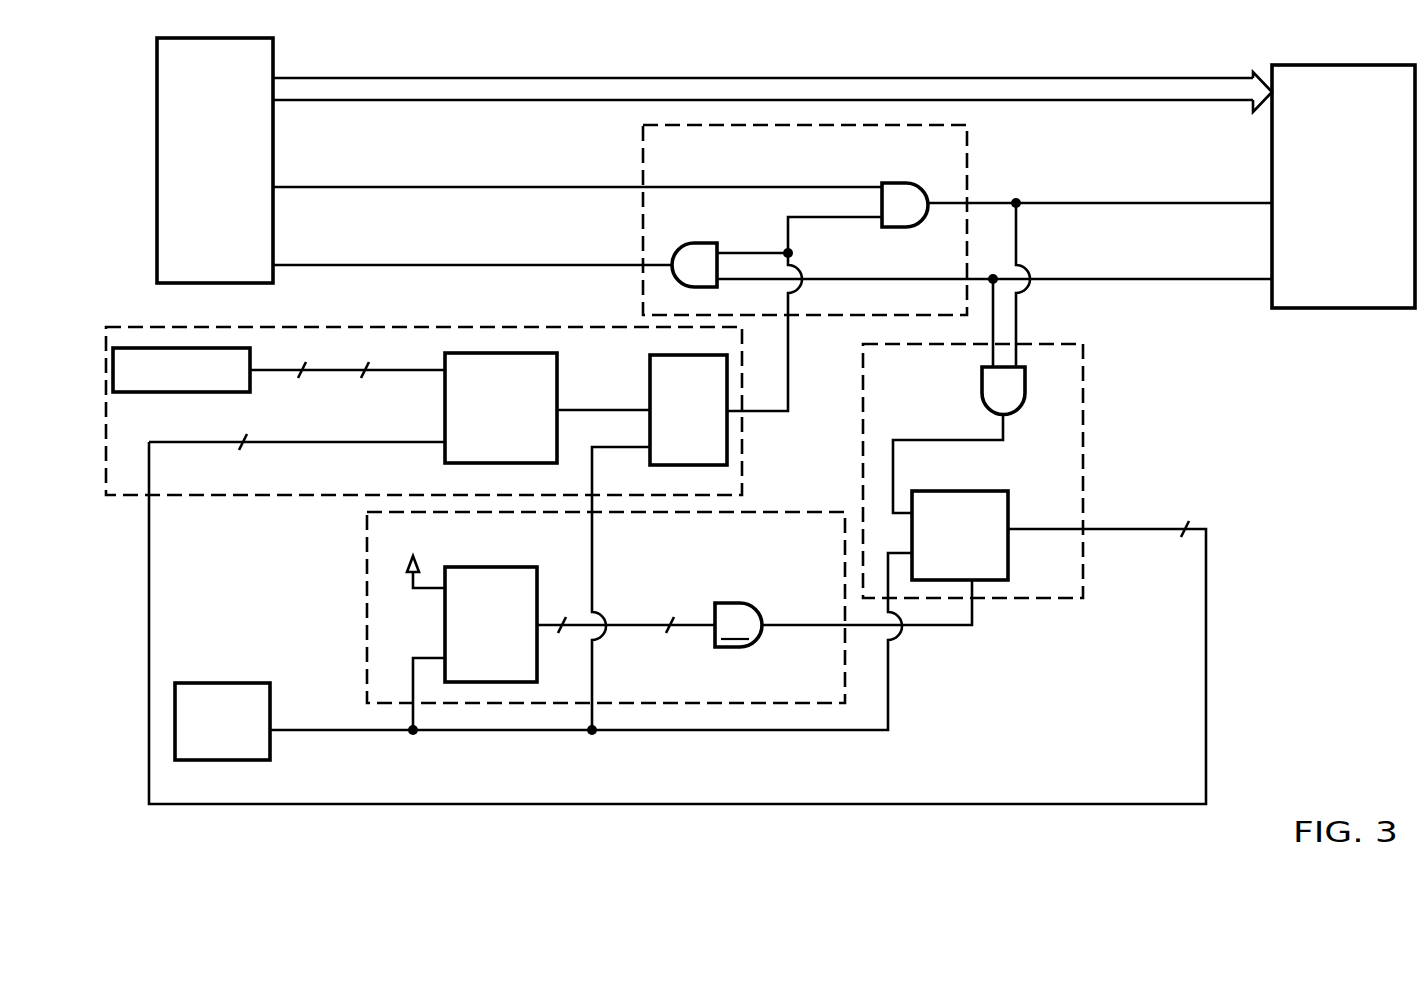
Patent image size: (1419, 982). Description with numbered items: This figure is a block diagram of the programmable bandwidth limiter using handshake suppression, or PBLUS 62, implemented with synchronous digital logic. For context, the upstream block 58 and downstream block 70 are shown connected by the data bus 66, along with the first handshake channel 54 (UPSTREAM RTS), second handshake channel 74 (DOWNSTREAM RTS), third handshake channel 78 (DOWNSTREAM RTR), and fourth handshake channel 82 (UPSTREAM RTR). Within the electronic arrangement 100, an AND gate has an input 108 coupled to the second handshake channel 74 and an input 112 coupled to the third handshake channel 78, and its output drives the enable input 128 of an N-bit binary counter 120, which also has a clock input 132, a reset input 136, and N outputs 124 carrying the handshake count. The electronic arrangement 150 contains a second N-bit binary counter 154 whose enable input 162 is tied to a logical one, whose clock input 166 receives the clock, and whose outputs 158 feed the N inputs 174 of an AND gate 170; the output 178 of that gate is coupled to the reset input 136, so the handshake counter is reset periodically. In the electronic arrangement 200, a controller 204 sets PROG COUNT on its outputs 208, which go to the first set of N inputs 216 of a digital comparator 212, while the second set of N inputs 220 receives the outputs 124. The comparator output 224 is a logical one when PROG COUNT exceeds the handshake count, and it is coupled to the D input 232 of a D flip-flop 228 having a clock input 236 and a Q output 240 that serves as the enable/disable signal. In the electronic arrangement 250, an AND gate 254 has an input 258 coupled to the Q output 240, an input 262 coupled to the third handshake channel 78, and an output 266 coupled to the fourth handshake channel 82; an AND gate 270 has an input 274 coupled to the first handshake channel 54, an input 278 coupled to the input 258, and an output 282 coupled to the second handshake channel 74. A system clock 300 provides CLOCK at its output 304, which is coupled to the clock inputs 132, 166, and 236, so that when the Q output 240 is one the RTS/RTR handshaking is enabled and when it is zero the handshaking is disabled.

The programmable bandwidth limiter using handshake suppression 62 is at (1156, 837).
The upstream block 58 is at (229, 269).
The downstream block 70 is at (1358, 213).
The data bus 66 is at (725, 78).
The first handshake channel 54 is at (451, 186).
The fourth handshake channel 82 is at (454, 264).
The second handshake channel 74 is at (1043, 202).
The third handshake channel 78 is at (1046, 278).
The electronic arrangement 250 is at (643, 153).
The AND gate 254 is at (702, 243).
The output 266 is at (672, 254).
The input 258 is at (718, 250).
The input 262 is at (720, 285).
The AND gate 270 is at (898, 183).
The input 274 is at (881, 186).
The input 278 is at (882, 225).
The output 282 is at (930, 198).
The electronic arrangement 200 is at (418, 330).
The controller 204 is at (150, 392).
The outputs 208 is at (253, 368).
The first set of N inputs 216 is at (445, 372).
The second set of N inputs 220 is at (445, 443).
The digital comparator 212 is at (516, 456).
The output 224 is at (557, 400).
The D flip-flop 228 is at (703, 386).
The D input 232 is at (650, 412).
The clock input 236 is at (650, 450).
The Q output 240 is at (727, 386).
The electronic arrangement 100 is at (1083, 446).
The input 108 is at (1025, 370).
The input 112 is at (985, 370).
The N-bit binary counter 120 is at (955, 491).
The enable input 128 is at (912, 512).
The clock input 132 is at (912, 553).
The outputs 124 is at (1008, 533).
The reset input 136 is at (975, 580).
The electronic arrangement 150 is at (367, 562).
The N-bit binary counter 154 is at (483, 567).
The outputs 158 is at (538, 625).
The enable input 162 is at (440, 590).
The clock input 166 is at (445, 656).
The AND gate 170 is at (738, 625).
The inputs 174 is at (713, 628).
The output 178 is at (765, 613).
The system clock 300 is at (222, 683).
The output 304 is at (270, 733).